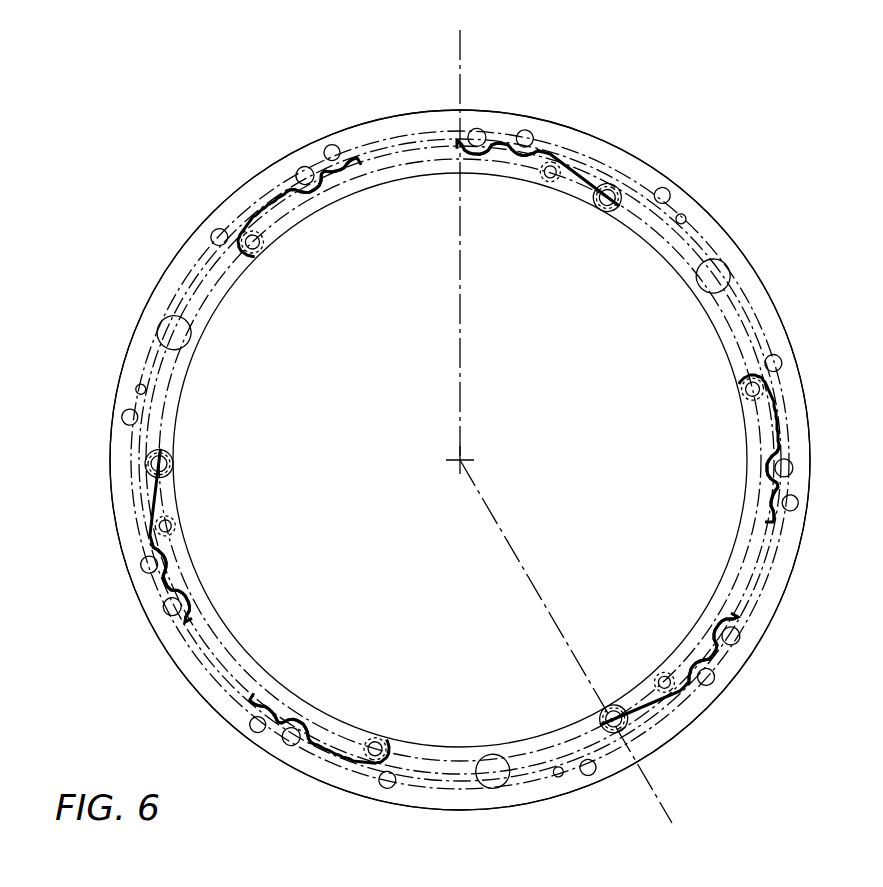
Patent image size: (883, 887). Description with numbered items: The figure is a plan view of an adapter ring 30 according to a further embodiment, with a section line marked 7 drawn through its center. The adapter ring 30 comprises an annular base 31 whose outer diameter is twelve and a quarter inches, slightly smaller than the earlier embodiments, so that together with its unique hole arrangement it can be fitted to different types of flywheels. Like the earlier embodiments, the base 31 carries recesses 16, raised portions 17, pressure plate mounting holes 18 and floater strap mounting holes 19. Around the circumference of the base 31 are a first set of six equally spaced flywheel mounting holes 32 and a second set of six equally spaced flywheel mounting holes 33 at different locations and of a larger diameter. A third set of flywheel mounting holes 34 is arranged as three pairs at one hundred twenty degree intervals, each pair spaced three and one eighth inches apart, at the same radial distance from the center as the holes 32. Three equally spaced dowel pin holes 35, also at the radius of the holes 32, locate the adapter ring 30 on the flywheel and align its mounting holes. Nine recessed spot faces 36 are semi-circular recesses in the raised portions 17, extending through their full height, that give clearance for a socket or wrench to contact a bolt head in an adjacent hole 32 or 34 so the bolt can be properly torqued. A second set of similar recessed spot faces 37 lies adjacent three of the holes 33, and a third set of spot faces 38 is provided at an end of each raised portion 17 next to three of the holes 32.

The section line 7- 7 is at (442, 30).
The recess 16 is at (700, 290).
The raised portion 17 is at (410, 175).
The pressure plate mounting hole 18 is at (549, 183).
The floater strap mounting hole 19 is at (604, 210).
The adapter ring 30 is at (108, 150).
The base 31 is at (616, 148).
The flywheel mounting hole 32 is at (538, 130).
The flywheel mounting hole 33 is at (672, 190).
The flywheel mounting hole 34 is at (480, 124).
The dowel pin hole 35 is at (688, 212).
The recessed spot face 36 is at (516, 155).
The recessed spot face 37 is at (762, 505).
The spot face 38 is at (768, 388).